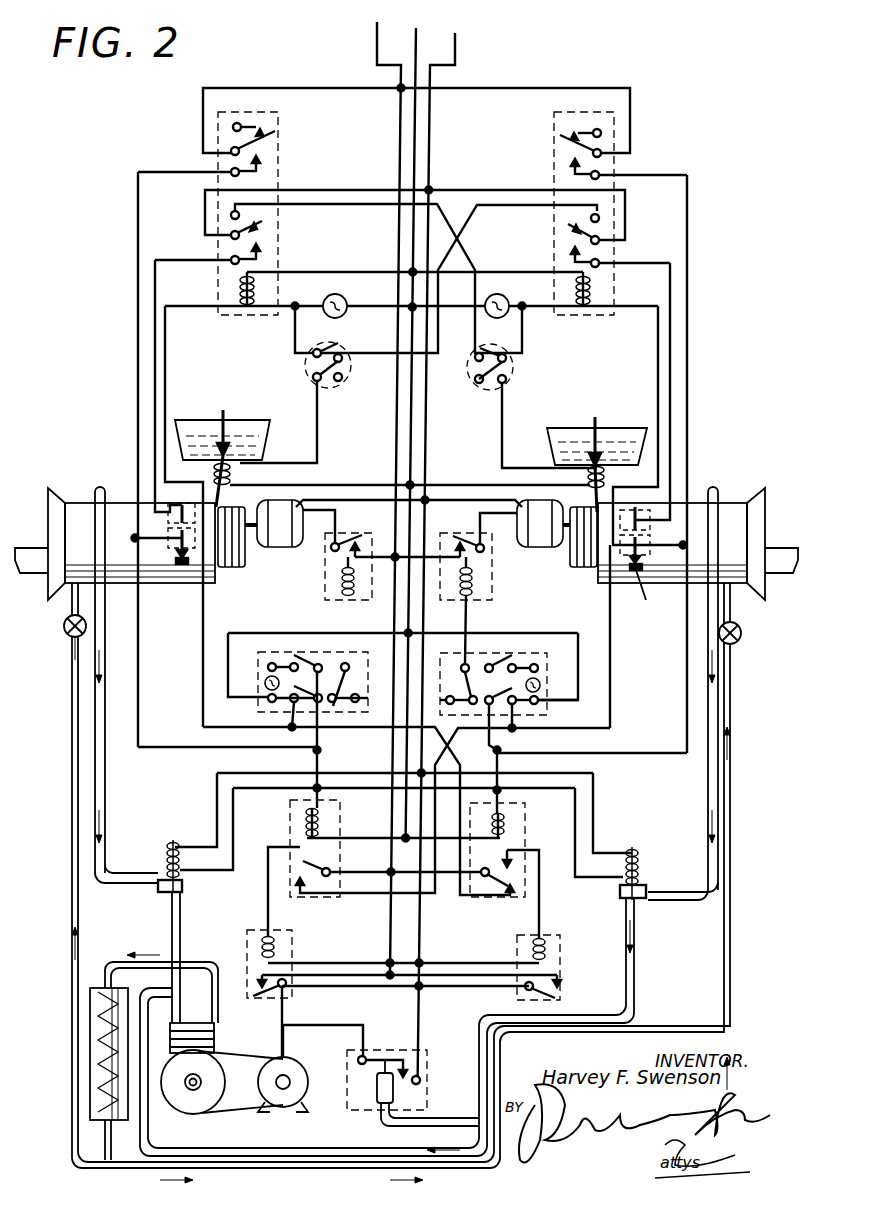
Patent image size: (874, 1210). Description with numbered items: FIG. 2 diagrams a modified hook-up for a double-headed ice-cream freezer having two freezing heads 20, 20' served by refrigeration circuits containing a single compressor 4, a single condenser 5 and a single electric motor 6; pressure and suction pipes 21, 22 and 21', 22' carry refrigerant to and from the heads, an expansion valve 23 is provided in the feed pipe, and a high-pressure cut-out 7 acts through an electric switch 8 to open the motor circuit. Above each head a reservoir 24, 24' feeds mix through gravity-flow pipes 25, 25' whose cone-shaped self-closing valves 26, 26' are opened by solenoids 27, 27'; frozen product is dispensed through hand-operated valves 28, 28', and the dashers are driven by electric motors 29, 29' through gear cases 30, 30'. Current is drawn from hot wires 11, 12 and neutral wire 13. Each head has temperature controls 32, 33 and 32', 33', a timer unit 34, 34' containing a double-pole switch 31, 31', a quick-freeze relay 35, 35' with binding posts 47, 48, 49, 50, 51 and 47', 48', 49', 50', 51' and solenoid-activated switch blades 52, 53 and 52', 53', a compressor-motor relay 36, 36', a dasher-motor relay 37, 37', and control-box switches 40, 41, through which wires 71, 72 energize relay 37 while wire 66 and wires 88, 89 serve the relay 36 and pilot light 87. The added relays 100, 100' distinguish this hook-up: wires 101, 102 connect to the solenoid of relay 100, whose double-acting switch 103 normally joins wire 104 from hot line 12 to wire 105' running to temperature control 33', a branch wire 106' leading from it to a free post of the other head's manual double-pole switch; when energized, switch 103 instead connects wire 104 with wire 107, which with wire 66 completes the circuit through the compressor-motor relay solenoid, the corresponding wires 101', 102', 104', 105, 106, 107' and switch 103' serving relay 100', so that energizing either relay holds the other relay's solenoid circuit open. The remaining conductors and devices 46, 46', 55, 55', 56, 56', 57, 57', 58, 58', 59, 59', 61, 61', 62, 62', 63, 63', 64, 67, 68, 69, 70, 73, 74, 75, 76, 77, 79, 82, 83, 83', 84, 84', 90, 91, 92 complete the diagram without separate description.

The compressor 4 is at (218, 1042).
The condenser 5 is at (100, 985).
The electric motor 6 is at (300, 1078).
The high-pressure cut-out 7 is at (370, 1110).
The electric switch 8 is at (393, 1060).
The hot wire 11 is at (455, 42).
The hot wire 12 is at (378, 42).
The neutral wire 13 is at (418, 40).
The freezing head 20 is at (697, 543).
The freezing head 20' is at (117, 538).
The pressure pipe 21 is at (742, 908).
The pressure pipe 21' is at (387, 883).
The suction pipe 22 is at (429, 821).
The suction pipe 22' is at (137, 755).
The expansion valve 23 is at (742, 628).
The reservoir 24 is at (582, 446).
The reservoir 24' is at (237, 440).
The valved gravity-flow pipe 25 is at (578, 489).
The valved gravity-flow pipe 25' is at (239, 481).
The cone-shaped self-closing valve 26 is at (612, 451).
The cone-shaped self-closing valve 26' is at (239, 432).
The solenoid 27 is at (585, 477).
The solenoid 27' is at (236, 476).
The dispensing valve 28 is at (781, 552).
The dispensing valve 28' is at (31, 567).
The dasher electric motor 29 is at (543, 536).
The dasher electric motor 29' is at (276, 536).
The gear case 30 is at (579, 544).
The gear case 30' is at (240, 538).
The double-pole manually-closed switch 31 is at (526, 411).
The double-pole manually-closed switch 31' is at (280, 406).
The temperature control 32 is at (636, 506).
The temperature control 32' is at (176, 503).
The temperature control 33 is at (649, 545).
The temperature control 33' is at (164, 541).
The manually-set timer unit 34 is at (504, 367).
The manually-set timer unit 34' is at (343, 365).
The quick-freeze relay 35 is at (561, 213).
The quick-freeze relay 35' is at (267, 213).
The condenser-motor relay 36 is at (521, 826).
The condenser-motor relay 36' is at (288, 854).
The dasher-motor relay 37 is at (482, 566).
The dasher-motor relay 37' is at (330, 566).
The single-pole switch 40 is at (460, 681).
The double-pole switch 41 is at (498, 656).
The conductor 46 is at (703, 464).
The conductor 46' is at (120, 459).
The binding post 47 is at (626, 150).
The binding post 47' is at (202, 139).
The binding post 48 is at (629, 168).
The binding post 48' is at (199, 162).
The binding post 49 is at (622, 211).
The binding post 49' is at (205, 213).
The binding post 50 is at (621, 247).
The binding post 50' is at (208, 240).
The binding post 51 is at (620, 264).
The binding post 51' is at (207, 260).
The solenoid-activated switch blade 52 is at (564, 146).
The solenoid-activated switch blade 52' is at (268, 125).
The solenoid-activated switch blade 53 is at (562, 234).
The solenoid-activated switch blade 53' is at (269, 228).
The conductor 55 is at (446, 278).
The conductor 55' is at (378, 278).
The relay coil 56 is at (556, 307).
The relay coil 56' is at (261, 312).
The conductor 57 is at (535, 295).
The conductor 57' is at (288, 295).
The conductor 58 is at (498, 262).
The conductor 58' is at (330, 262).
The conductor 59 is at (635, 425).
The conductor 59' is at (184, 516).
The conductor 61 is at (652, 391).
The conductor 61' is at (143, 386).
The conductor 62 is at (527, 204).
The conductor 62' is at (317, 201).
The conductor 63 is at (515, 120).
The conductor 63' is at (302, 110).
The conductor 64 is at (653, 753).
The wire connection 66 is at (475, 963).
The conductor 67 is at (458, 978).
The conductor 68 is at (497, 986).
The conductor 69 is at (502, 435).
The conductor 70 is at (335, 1025).
The wire 71 is at (466, 620).
The wire 72 is at (407, 570).
The contact 73 is at (454, 548).
The contact 74 is at (480, 516).
The conductor 75 is at (437, 501).
The conductor 76 is at (401, 848).
The conductor 77 is at (593, 812).
The conductor 79 is at (459, 485).
The electrode lead 82 is at (647, 575).
The conductor 83 is at (453, 320).
The conductor 83' is at (371, 292).
The lamp 84 is at (498, 298).
The lamp 84' is at (348, 311).
The pilot light 87 is at (540, 685).
The wire 88 is at (530, 662).
The wire 89 is at (560, 633).
The solenoid valve 90 is at (170, 858).
The valve body 91 is at (642, 898).
The conductor 92 is at (635, 636).
The added relay 100 is at (518, 846).
The added relay 100' is at (289, 846).
The wire 101 is at (591, 780).
The conductor 101' is at (247, 740).
The wire 102 is at (480, 798).
The conductor 102' is at (403, 826).
The double-acting switch 103 is at (528, 894).
The contact 103' is at (304, 890).
The wire 104 is at (450, 895).
The conductor 104' is at (405, 860).
The conductor 105 is at (508, 777).
The wire 105' is at (331, 783).
The conductor 106 is at (425, 798).
The branch wire 106' is at (379, 811).
The wire 107 is at (562, 911).
The conductor 107' is at (249, 915).